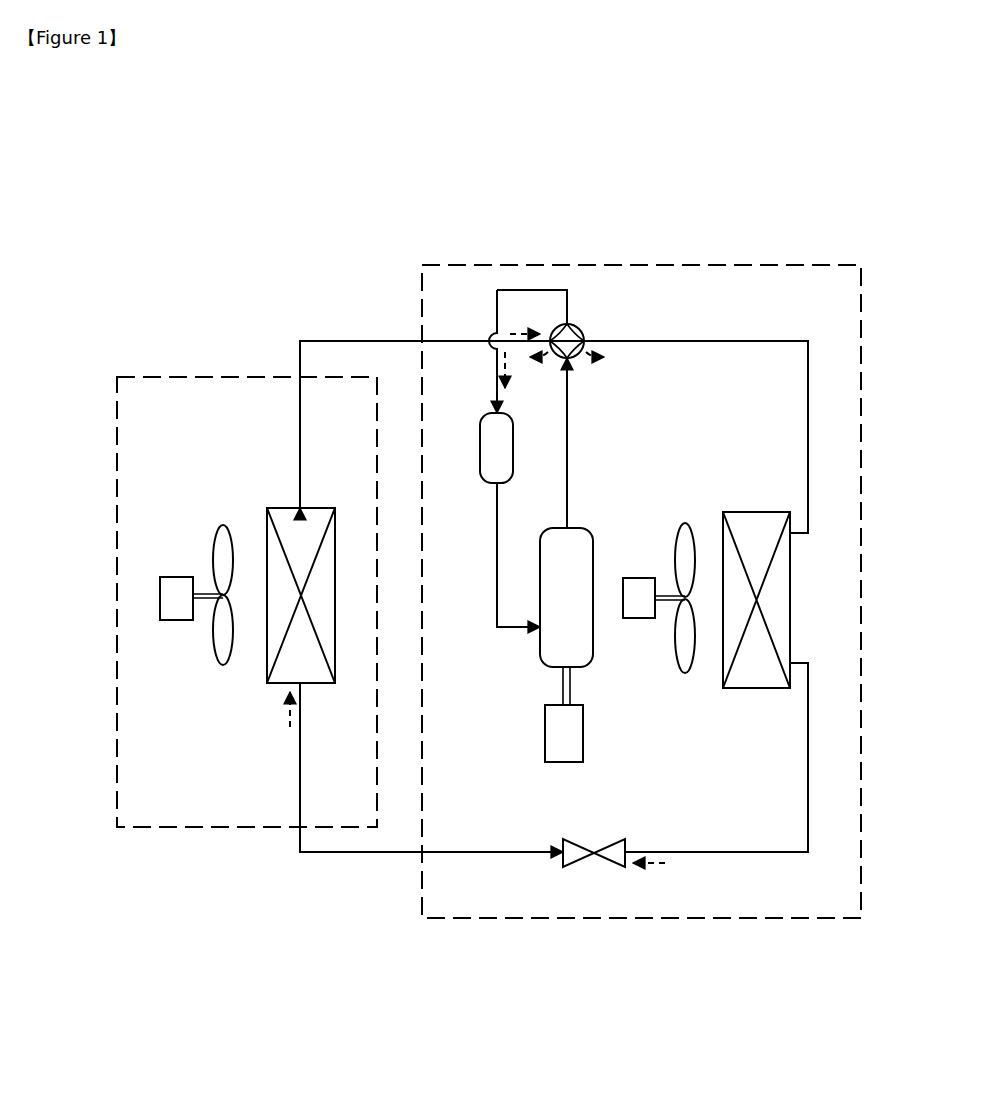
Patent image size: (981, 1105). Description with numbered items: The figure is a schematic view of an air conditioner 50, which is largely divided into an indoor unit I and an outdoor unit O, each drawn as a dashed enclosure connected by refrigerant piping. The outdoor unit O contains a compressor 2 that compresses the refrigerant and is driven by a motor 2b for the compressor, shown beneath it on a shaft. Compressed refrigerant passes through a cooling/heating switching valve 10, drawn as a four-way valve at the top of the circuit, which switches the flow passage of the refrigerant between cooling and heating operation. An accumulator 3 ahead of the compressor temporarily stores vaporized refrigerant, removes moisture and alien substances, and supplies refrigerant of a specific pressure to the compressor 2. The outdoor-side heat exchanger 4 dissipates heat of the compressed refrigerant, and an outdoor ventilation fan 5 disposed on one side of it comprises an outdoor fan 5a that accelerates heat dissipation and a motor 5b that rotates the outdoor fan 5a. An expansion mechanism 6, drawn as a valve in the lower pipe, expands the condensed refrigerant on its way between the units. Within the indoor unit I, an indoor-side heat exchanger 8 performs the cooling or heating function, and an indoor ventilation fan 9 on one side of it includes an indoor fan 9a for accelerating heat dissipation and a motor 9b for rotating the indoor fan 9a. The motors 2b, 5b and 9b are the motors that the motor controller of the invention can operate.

The air conditioner 50 is at (805, 183).
The outdoor unit O is at (683, 928).
The indoor unit I is at (257, 828).
The cooling/heating switching valve 10 is at (581, 327).
The accumulator 3 is at (480, 452).
The compressor 2 is at (563, 633).
The motor for the compressor 2b is at (583, 730).
The outdoor ventilation fan 5 is at (654, 543).
The outdoor fan 5a is at (683, 525).
The motor for rotating the outdoor fan 5b is at (635, 585).
The outdoor-side heat exchanger 4 is at (770, 587).
The indoor-side heat exchanger 8 is at (305, 668).
The indoor ventilation fan 9 is at (175, 731).
The indoor fan 9a is at (226, 665).
The motor for rotating the indoor fan 9b is at (175, 615).
The expansion mechanism 6 is at (611, 862).